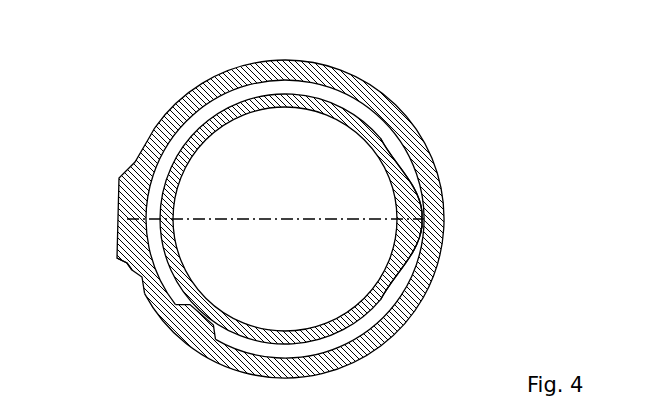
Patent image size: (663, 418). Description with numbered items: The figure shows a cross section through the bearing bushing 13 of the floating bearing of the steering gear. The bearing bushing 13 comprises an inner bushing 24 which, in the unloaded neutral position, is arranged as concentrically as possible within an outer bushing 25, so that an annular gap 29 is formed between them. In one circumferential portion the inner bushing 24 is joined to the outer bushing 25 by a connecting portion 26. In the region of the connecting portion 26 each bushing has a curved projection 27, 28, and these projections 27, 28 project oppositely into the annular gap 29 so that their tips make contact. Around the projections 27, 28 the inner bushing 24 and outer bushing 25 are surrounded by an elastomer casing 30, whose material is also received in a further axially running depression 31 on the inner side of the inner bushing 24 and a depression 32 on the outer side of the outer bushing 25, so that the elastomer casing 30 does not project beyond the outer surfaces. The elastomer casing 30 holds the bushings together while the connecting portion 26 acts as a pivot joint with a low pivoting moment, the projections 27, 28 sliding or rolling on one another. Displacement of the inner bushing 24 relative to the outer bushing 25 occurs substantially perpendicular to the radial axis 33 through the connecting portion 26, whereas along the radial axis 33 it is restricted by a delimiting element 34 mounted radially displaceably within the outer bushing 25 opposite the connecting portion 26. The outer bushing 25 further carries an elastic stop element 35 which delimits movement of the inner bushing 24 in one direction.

The bearing bushing 13 is at (161, 68).
The inner bushing 24 is at (182, 140).
The outer bushing 25 is at (243, 68).
The connecting portion 26 is at (434, 184).
The projection 27 is at (446, 214).
The projection 28 is at (434, 219).
The annular gap 29 is at (372, 88).
The elastomer casing 30 is at (433, 250).
The depression 31 is at (399, 215).
The depression 32 is at (447, 227).
The radial axis 33 is at (106, 205).
The delimiting element 34 is at (124, 238).
The elastic stop element 35 is at (183, 333).